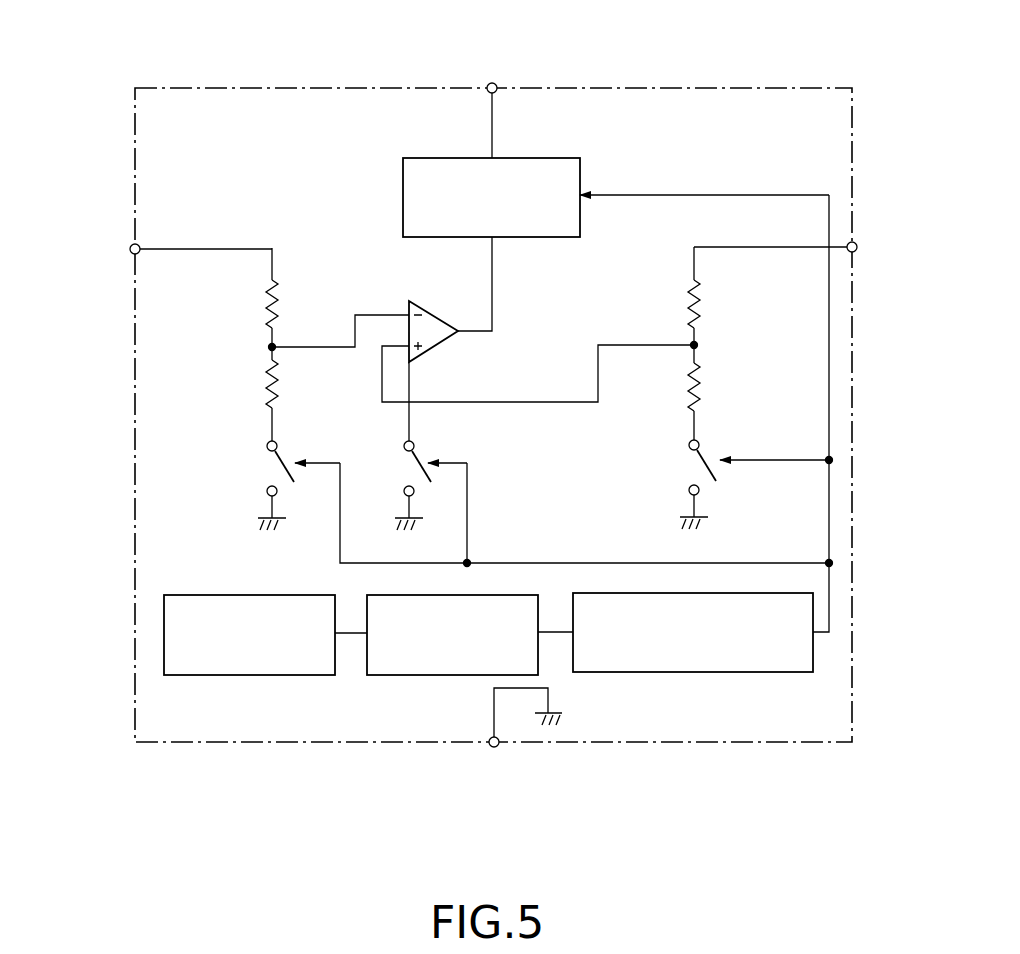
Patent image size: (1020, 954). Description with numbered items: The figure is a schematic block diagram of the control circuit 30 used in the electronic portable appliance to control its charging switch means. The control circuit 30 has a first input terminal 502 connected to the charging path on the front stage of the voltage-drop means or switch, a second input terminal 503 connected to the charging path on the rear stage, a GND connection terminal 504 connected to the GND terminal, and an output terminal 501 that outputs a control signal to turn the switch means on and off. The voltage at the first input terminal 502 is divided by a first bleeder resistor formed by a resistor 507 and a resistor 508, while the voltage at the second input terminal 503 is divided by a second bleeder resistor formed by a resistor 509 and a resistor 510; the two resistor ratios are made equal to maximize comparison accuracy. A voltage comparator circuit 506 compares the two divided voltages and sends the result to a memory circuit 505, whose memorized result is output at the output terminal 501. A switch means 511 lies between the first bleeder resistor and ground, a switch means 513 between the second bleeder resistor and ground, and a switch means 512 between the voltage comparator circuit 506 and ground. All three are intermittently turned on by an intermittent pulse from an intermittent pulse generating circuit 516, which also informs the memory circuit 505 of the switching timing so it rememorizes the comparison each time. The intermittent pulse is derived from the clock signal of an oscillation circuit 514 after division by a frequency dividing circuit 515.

The control circuit 30 is at (655, 88).
The output terminal 501 is at (493, 83).
The first input terminal 502 is at (130, 252).
The second input terminal 503 is at (858, 245).
The GND connection terminal 504 is at (494, 748).
The memory circuit 505 is at (580, 158).
The voltage comparator circuit 506 is at (444, 304).
The resistor 507 is at (268, 302).
The resistor 508 is at (268, 392).
The resistor 509 is at (704, 306).
The resistor 510 is at (704, 385).
The switch means 511 is at (268, 470).
The switch means 512 is at (421, 457).
The switch means 513 is at (700, 468).
The oscillation circuit 514 is at (264, 676).
The frequency dividing circuit 515 is at (430, 676).
The intermittent pulse generating circuit 516 is at (697, 673).